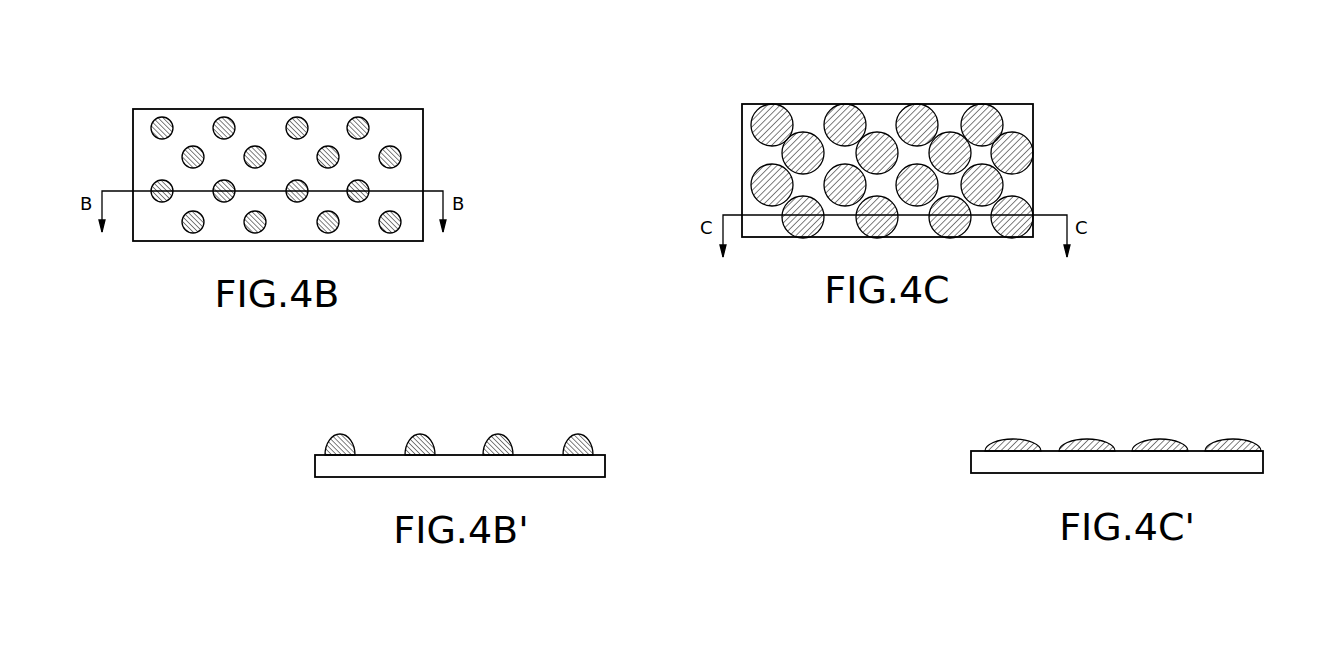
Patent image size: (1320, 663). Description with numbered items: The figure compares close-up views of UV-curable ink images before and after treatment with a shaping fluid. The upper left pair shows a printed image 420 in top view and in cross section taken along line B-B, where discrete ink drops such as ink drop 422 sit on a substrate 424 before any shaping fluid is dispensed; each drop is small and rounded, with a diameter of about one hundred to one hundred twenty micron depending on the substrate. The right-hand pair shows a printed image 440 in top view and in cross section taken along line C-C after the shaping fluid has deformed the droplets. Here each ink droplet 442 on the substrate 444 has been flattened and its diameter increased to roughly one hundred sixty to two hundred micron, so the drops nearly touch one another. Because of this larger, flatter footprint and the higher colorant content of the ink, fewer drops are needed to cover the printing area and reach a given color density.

In FIG. 4B, the printed image 420 is at (307, 127).
In FIG. 4B', the printed image 420 is at (506, 398).
In FIG. 4B, the ink drop 422 is at (400, 156).
In FIG. 4B', the ink drop 422 is at (578, 435).
In FIG. 4B, the substrate 424 is at (327, 109).
In FIG. 4B', the substrate 424 is at (605, 460).
In FIG. 4C, the printed image 440 is at (924, 129).
In FIG. 4C', the printed image 440 is at (1072, 388).
In FIG. 4C, the ink droplet 442 is at (1032, 156).
In FIG. 4C', the ink droplet 442 is at (1160, 439).
In FIG. 4C, the substrate 444 is at (955, 104).
In FIG. 4C', the substrate 444 is at (971, 454).